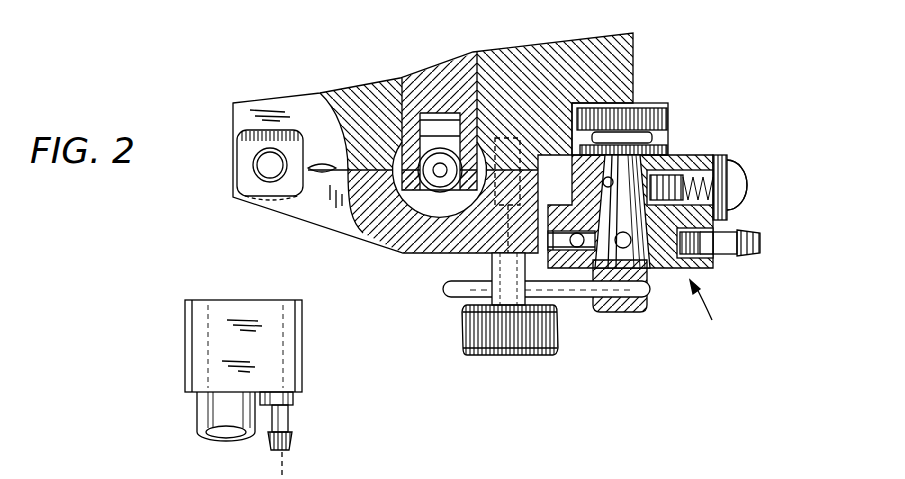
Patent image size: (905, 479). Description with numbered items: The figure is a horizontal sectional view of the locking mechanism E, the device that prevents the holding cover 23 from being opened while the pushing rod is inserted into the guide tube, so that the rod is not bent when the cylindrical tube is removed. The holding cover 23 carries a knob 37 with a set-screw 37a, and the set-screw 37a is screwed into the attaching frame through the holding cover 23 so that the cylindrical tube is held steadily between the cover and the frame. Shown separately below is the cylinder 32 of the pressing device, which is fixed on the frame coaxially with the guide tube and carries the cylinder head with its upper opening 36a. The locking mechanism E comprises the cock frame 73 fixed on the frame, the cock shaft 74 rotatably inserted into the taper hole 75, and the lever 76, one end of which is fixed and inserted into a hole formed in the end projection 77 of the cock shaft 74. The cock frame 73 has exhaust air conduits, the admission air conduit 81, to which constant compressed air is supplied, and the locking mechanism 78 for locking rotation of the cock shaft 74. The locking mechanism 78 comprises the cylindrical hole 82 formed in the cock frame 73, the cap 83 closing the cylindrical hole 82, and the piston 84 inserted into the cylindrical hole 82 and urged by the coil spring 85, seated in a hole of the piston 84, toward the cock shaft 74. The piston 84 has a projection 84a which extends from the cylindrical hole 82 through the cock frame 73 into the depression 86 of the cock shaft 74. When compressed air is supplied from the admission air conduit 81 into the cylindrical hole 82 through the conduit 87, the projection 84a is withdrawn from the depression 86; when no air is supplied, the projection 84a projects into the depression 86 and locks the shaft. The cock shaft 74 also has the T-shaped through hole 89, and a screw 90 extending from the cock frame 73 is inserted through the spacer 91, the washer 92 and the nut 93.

The holding cover 23 is at (371, 230).
The cylinder 32 is at (200, 413).
The upper opening 36a is at (282, 418).
The knob 37 is at (472, 335).
The set-screw 37a is at (512, 138).
The cock frame 73 is at (668, 272).
The cock shaft 74 is at (604, 228).
The taper hole 75 is at (590, 185).
The lever 76 is at (457, 290).
The end projection 77 is at (617, 312).
The locking mechanism 78 is at (751, 170).
The admission air conduit 81 is at (725, 243).
The cylindrical hole 82 is at (687, 170).
The cap 83 is at (748, 170).
The piston 84 is at (720, 212).
The projection 84a is at (678, 197).
The coil spring 85 is at (700, 194).
The depression 86 is at (638, 190).
The conduit 87 is at (658, 220).
The T-shaped through hole 89 is at (622, 250).
The screw 90 is at (640, 103).
The spacer 91 is at (652, 153).
The washer 92 is at (628, 141).
The nut 93 is at (657, 118).
The locking mechanism E is at (713, 323).